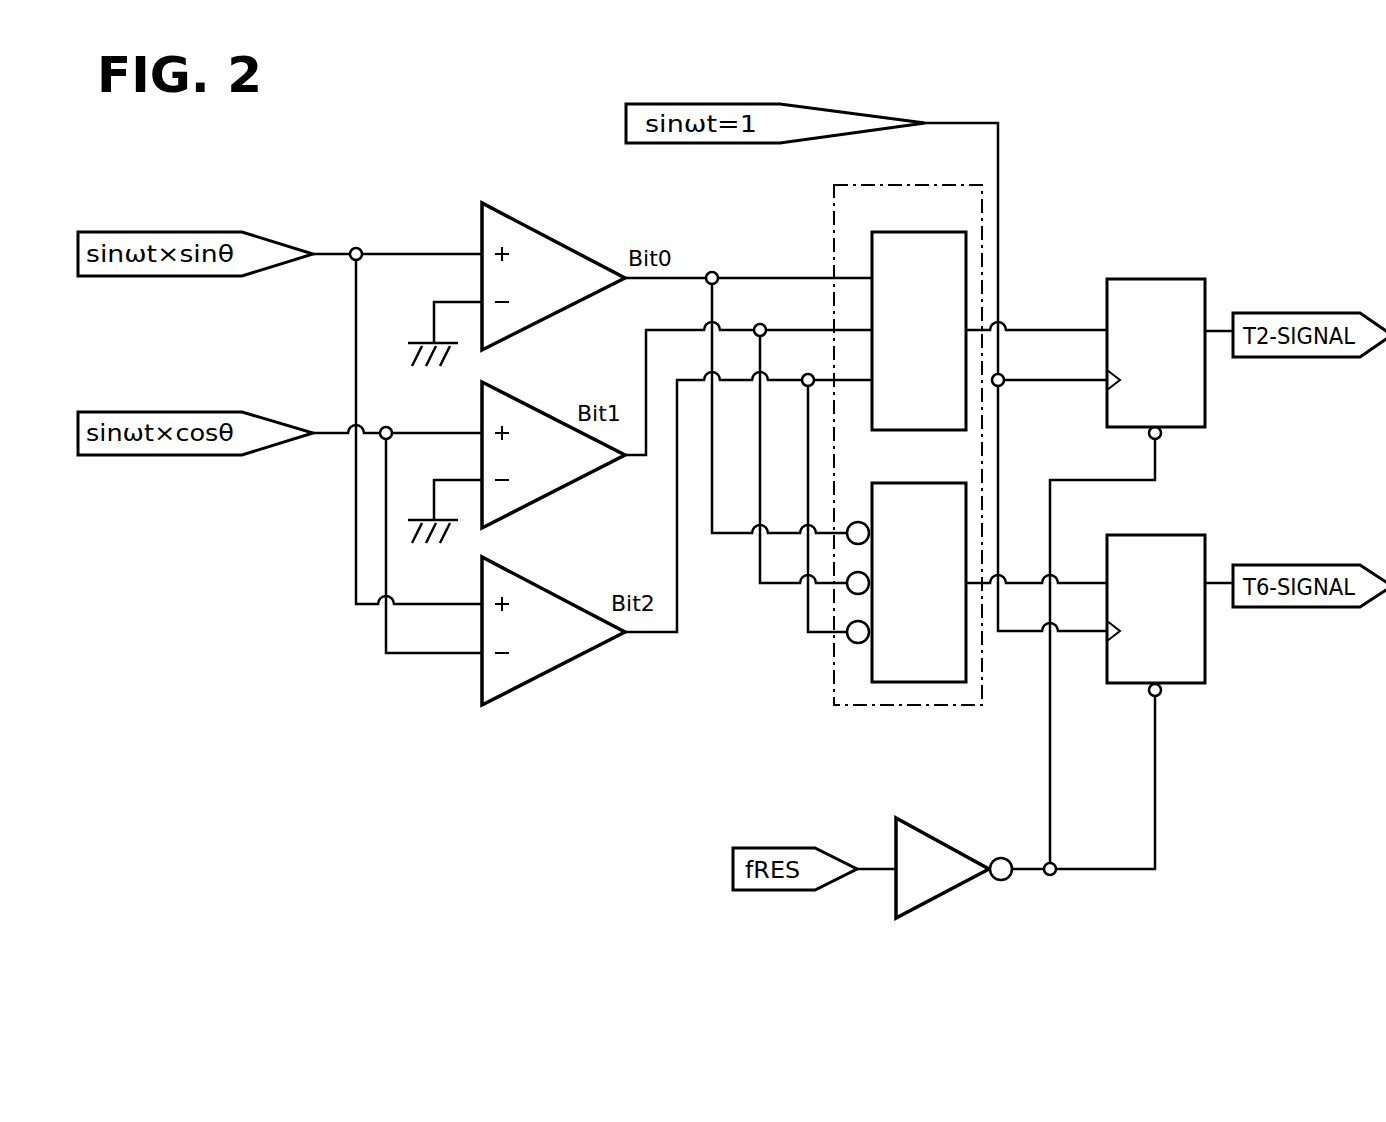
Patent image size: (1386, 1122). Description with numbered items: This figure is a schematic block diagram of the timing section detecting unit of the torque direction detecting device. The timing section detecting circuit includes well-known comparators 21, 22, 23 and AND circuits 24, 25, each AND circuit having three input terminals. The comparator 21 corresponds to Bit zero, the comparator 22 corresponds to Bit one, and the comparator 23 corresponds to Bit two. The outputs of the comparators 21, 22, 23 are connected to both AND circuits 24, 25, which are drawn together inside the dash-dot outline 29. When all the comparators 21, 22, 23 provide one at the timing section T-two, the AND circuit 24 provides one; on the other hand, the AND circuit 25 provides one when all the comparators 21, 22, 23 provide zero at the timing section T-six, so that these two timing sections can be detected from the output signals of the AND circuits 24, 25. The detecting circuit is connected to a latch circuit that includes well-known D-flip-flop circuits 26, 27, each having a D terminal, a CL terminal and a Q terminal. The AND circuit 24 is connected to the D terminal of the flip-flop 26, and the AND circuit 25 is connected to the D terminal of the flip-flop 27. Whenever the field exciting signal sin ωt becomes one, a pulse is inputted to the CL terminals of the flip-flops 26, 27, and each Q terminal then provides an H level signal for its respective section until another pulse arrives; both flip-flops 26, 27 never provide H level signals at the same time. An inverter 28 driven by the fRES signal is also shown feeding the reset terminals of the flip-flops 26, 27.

The comparator 21 is at (537, 228).
The comparator 22 is at (556, 494).
The comparator 23 is at (556, 671).
The AND circuit 24 is at (908, 232).
The AND circuit 25 is at (908, 483).
The D-flip-flop circuit 26 is at (1160, 279).
The D-flip-flop circuit 27 is at (1160, 535).
The inverter 28 is at (940, 896).
The decoder circuit 29 is at (907, 185).